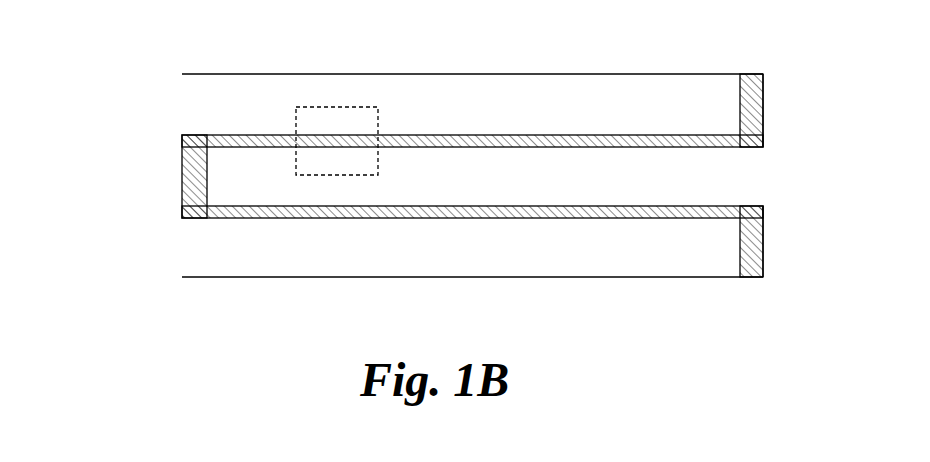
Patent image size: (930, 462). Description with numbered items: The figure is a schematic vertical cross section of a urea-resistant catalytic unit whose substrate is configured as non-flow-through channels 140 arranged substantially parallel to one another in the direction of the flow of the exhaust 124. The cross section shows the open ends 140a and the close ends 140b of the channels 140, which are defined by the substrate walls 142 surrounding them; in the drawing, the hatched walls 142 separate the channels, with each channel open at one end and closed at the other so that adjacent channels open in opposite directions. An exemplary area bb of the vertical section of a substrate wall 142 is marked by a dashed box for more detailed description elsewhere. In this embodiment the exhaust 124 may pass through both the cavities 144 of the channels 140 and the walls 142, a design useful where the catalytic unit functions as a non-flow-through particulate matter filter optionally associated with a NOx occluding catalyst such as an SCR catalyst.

The exhaust 124 is at (171, 108).
The non-flow-through channels 140 is at (653, 251).
The open ends 140a is at (232, 113).
The close ends 140b is at (735, 113).
The substrate walls 142 is at (533, 150).
The cavities 144 is at (457, 113).
The exemplary area of the vertical section of the substrate wall bb is at (340, 106).